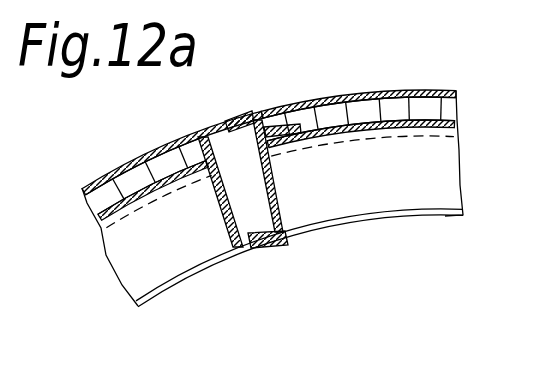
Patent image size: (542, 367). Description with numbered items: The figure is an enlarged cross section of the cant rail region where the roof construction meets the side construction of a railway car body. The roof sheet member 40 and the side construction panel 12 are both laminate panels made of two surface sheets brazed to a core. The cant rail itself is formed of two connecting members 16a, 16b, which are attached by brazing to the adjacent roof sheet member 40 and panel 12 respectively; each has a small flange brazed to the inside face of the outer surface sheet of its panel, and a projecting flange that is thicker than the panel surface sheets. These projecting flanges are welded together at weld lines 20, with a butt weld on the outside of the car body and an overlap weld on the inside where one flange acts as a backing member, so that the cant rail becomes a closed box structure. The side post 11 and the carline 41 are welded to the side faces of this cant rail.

The side post 11 is at (167, 260).
The panel of the side construction 12 is at (113, 190).
The connecting member 16a is at (245, 118).
The connecting member 16b is at (200, 128).
The weld line 20 is at (227, 124).
The roof sheet member 40 is at (423, 107).
The carline 41 is at (442, 198).